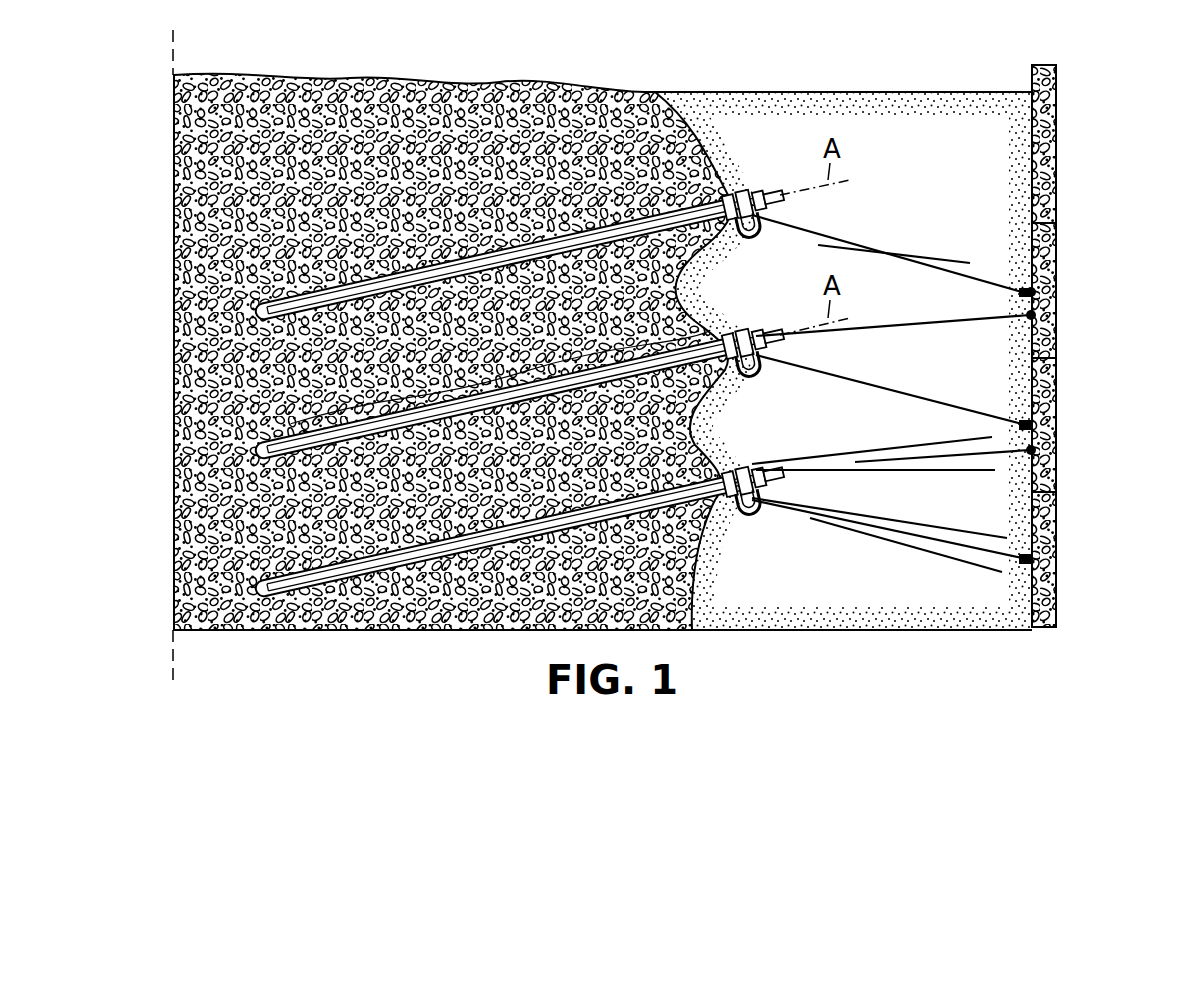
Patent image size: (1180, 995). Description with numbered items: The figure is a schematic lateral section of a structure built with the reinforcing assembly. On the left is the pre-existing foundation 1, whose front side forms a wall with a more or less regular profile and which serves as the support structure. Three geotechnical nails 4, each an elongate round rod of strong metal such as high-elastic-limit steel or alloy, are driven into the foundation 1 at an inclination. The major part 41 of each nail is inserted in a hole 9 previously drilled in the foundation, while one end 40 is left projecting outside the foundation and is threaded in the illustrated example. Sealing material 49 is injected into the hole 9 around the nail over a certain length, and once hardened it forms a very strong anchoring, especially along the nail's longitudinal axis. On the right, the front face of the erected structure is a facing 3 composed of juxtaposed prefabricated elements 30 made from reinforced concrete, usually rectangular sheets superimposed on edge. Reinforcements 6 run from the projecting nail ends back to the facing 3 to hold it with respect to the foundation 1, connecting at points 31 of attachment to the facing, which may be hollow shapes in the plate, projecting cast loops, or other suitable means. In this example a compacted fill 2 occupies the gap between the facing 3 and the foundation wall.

The pre-existing foundation 1 is at (348, 184).
The compacted fill 2 is at (880, 219).
The facing 3 is at (1099, 345).
The geotechnical nail 4 is at (521, 411).
The reinforcements 6 is at (893, 388).
The hole 9 is at (371, 584).
The prefabricated element 30 is at (1040, 100).
The point of attachment 31 is at (1040, 425).
The end 40 is at (746, 327).
The major part 41 is at (500, 377).
The sealing material 49 is at (427, 562).